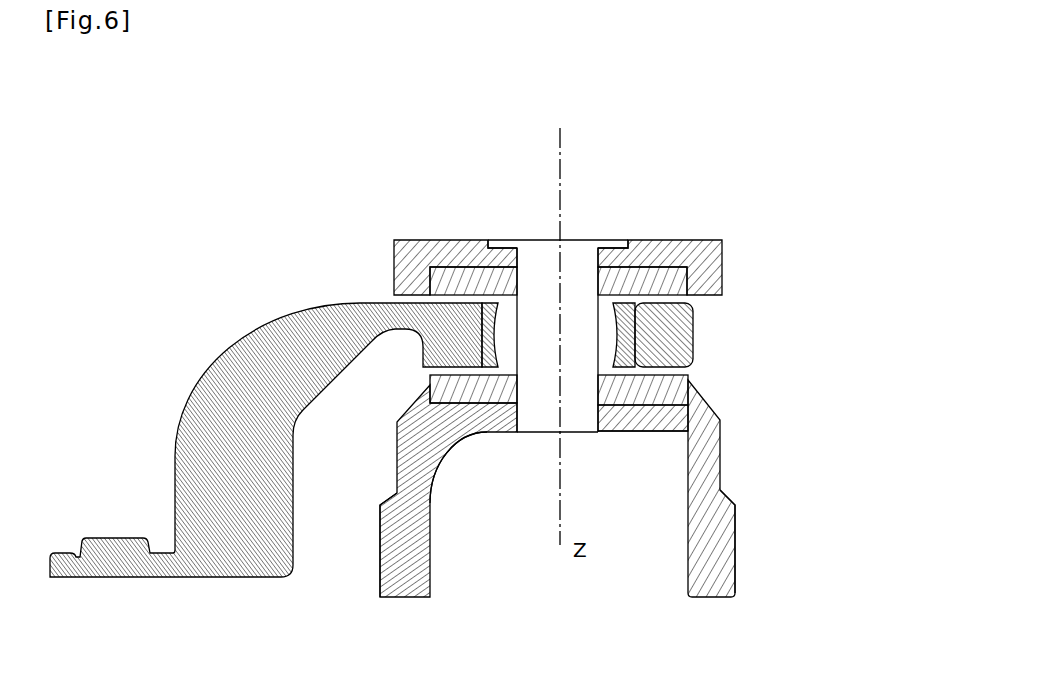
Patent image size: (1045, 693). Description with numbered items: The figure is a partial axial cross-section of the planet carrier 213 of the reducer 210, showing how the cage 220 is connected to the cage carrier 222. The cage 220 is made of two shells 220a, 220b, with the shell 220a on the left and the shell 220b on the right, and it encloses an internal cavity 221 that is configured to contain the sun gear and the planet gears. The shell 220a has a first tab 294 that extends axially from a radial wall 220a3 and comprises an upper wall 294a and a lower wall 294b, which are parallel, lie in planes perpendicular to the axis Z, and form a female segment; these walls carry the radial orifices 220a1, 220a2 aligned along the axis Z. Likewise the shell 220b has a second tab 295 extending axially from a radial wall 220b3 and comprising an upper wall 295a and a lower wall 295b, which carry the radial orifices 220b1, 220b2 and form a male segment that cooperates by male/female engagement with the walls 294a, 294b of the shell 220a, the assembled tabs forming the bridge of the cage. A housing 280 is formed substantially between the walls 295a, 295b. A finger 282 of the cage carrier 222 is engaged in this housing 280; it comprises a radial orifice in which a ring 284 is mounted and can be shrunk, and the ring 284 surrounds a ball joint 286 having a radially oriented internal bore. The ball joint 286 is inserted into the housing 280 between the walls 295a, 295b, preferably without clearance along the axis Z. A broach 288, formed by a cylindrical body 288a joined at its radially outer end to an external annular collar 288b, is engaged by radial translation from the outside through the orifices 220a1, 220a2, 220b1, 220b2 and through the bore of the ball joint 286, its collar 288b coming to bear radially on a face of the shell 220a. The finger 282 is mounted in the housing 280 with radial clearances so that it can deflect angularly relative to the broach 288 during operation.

The reducer 210 is at (605, 387).
The planet carrier 213 is at (783, 238).
The cage 220 is at (690, 224).
The shell 220a is at (425, 593).
The radial orifice 220a1 is at (518, 283).
The radial orifice 220a2 is at (527, 428).
The radial wall 220a3 is at (385, 545).
The shell 220b is at (708, 600).
The radial orifice 220b1 is at (550, 250).
The radial orifice 220b2 is at (522, 392).
The radial wall 220b3 is at (733, 553).
The internal cavity 221 is at (607, 364).
The cage carrier 222 is at (203, 366).
The housing 280 is at (712, 309).
The finger 282 is at (253, 343).
The ring 284 is at (487, 307).
The ball joint 286 is at (615, 349).
The broach 288 is at (573, 255).
The cylindrical body 288a is at (580, 414).
The external annular collar 288b is at (628, 258).
The tab 294 is at (480, 442).
The upper wall 294a is at (683, 228).
The lower wall 294b is at (667, 433).
The tab 295 is at (447, 263).
The upper wall 295a is at (720, 256).
The lower wall 295b is at (655, 388).